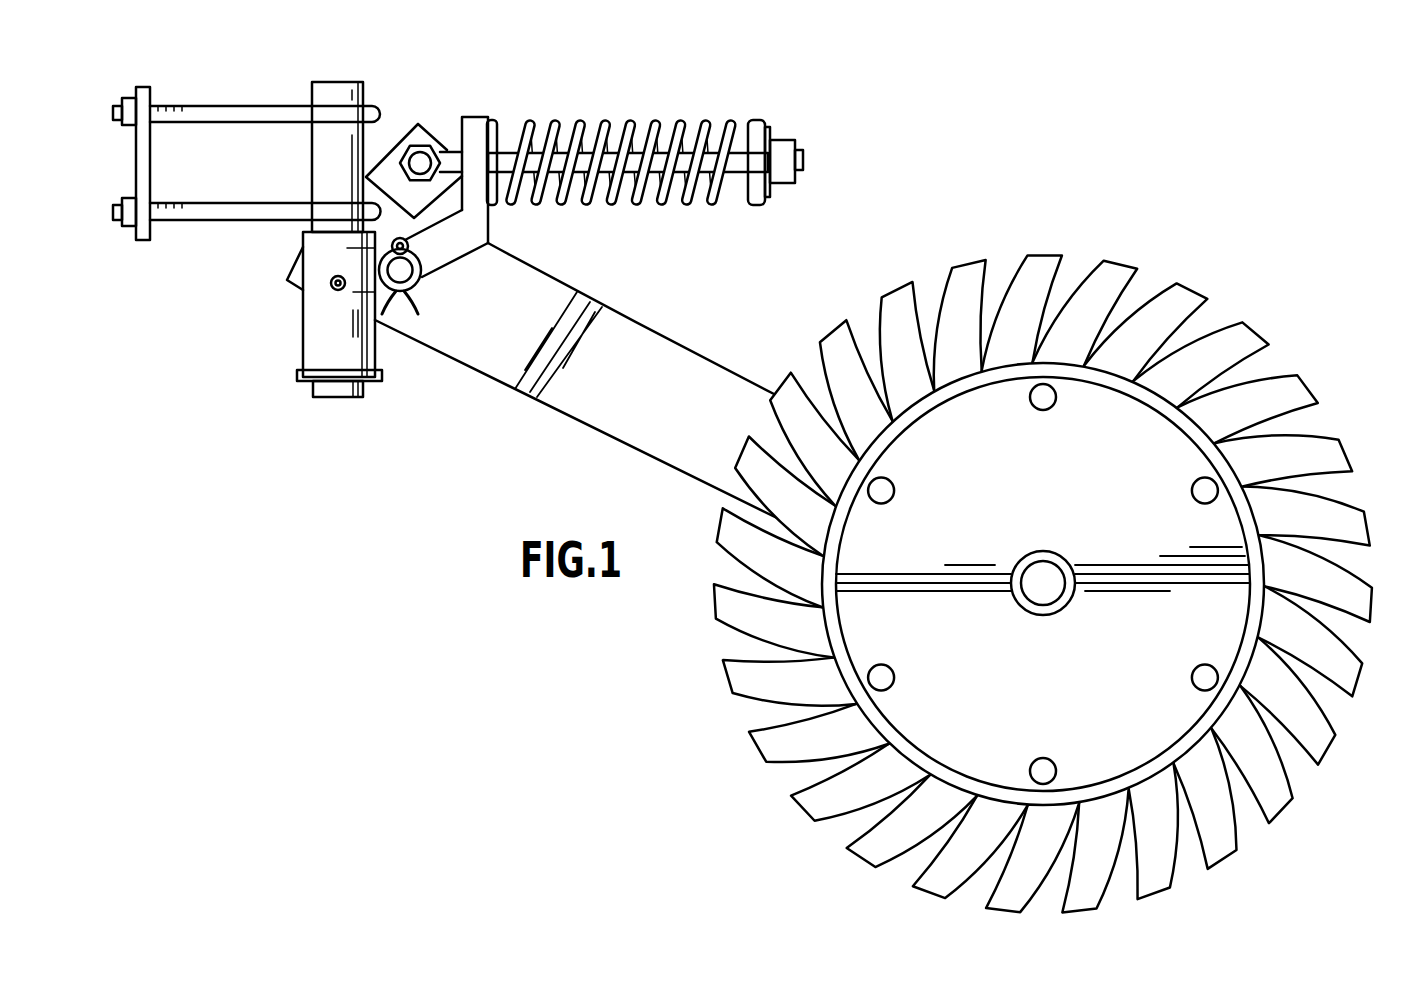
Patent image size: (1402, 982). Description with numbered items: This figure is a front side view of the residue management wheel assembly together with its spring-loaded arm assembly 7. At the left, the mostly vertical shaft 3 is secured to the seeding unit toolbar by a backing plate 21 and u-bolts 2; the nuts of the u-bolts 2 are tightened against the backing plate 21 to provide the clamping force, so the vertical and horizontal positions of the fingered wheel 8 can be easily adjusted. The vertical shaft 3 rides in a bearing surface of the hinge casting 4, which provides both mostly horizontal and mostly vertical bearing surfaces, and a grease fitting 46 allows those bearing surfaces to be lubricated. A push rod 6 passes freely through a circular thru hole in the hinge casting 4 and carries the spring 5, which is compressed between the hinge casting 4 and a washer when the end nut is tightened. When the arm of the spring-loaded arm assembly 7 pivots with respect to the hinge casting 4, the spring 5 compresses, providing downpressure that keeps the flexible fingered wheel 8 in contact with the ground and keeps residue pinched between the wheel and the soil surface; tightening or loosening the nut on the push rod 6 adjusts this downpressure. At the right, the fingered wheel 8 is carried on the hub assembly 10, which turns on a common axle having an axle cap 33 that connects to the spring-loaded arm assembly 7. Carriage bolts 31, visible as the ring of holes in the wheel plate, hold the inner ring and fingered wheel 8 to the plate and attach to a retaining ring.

The u-bolts 2 is at (208, 106).
The backing plate 21 is at (135, 155).
The vertical shaft 3 is at (311, 155).
The hinge casting 4 is at (301, 352).
The grease fitting 46 is at (333, 288).
The spring 5 is at (641, 124).
The push rod 6 is at (598, 160).
The spring-loaded arm assembly 7 is at (722, 338).
The flexible fingered wheel 8 is at (1126, 262).
The hub assembly 10 is at (1027, 689).
The axle cap 33 is at (1050, 553).
The carriage bolts 31 is at (1033, 760).